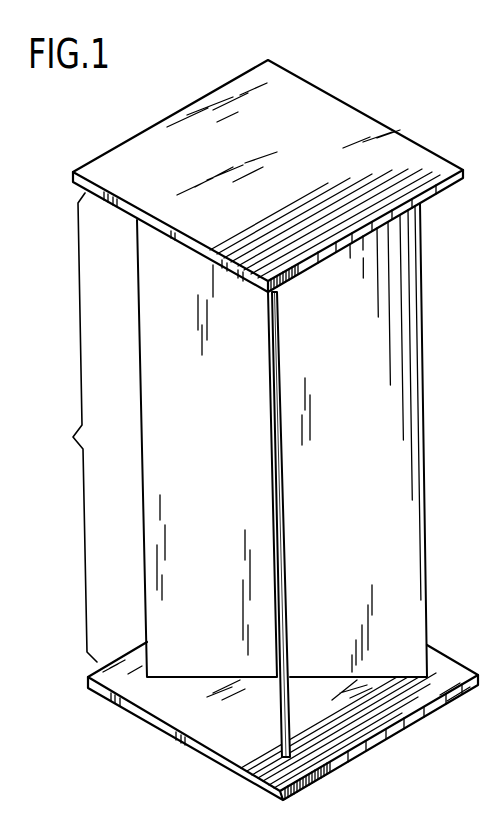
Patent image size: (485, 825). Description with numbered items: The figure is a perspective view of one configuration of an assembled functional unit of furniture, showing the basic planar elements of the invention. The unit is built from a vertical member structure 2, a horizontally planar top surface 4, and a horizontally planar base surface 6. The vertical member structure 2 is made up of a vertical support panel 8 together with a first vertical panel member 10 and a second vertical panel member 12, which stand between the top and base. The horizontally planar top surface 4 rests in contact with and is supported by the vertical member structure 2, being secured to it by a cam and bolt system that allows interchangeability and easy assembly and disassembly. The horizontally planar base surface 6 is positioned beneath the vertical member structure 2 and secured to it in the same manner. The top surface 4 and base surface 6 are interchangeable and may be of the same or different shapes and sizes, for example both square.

The vertical member structure 2 is at (267, 427).
The horizontally planar top surface 4 is at (357, 122).
The horizontally planar base surface 6 is at (203, 728).
The vertical support panel 8 is at (283, 483).
The first vertical panel member 10 is at (155, 464).
The second vertical panel member 12 is at (397, 480).